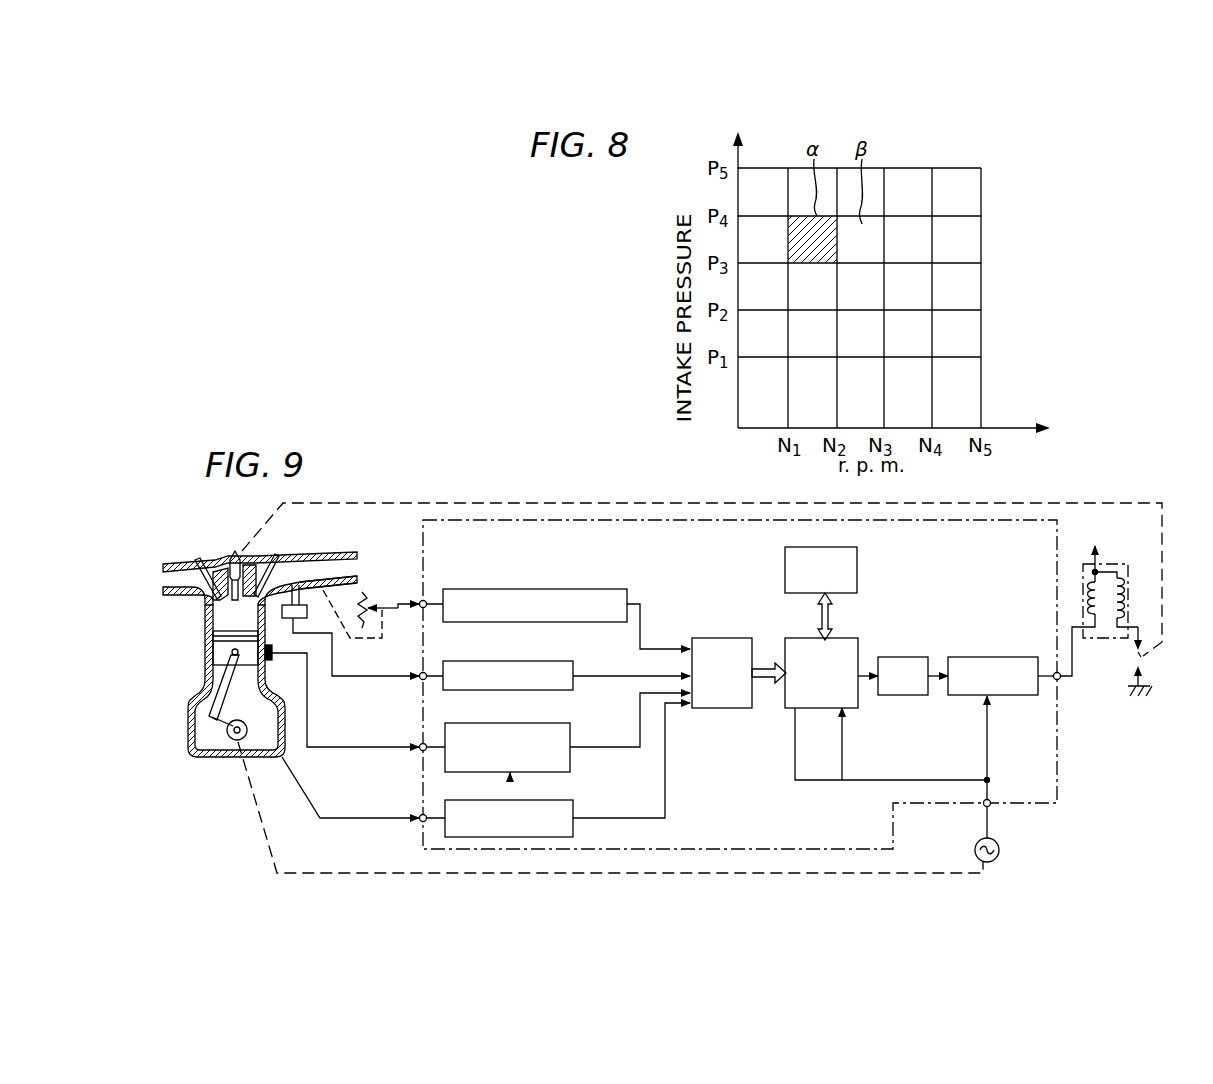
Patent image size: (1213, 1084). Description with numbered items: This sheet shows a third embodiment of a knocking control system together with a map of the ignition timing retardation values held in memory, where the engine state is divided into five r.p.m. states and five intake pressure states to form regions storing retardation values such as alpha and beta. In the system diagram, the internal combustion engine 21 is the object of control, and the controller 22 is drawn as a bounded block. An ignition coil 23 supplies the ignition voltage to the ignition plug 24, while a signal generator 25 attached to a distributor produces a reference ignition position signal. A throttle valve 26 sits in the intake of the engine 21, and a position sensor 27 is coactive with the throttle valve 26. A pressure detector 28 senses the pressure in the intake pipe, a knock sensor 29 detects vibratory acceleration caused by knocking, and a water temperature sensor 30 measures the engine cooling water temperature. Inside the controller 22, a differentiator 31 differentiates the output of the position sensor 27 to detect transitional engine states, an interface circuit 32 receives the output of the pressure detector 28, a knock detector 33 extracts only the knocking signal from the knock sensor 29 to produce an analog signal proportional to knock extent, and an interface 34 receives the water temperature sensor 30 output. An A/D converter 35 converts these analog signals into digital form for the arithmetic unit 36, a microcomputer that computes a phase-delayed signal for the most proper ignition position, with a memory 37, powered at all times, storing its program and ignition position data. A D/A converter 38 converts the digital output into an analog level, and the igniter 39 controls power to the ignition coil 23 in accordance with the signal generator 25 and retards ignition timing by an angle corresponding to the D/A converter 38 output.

The internal combustion engine 21 is at (192, 692).
The controller 22 is at (421, 576).
The ignition coil 23 is at (1105, 560).
The ignition plug 24 is at (232, 558).
The signal generator 25 is at (996, 841).
The throttle valve 26 is at (320, 574).
The position sensor 27 is at (365, 600).
The pressure detector 28 is at (307, 612).
The knock sensor 29 is at (273, 655).
The water temperature sensor 30 is at (285, 757).
The differentiator 31 is at (518, 588).
The interface circuit 32 is at (490, 660).
The knock detector 33 is at (483, 722).
The interface 34 is at (502, 799).
The A/D converter 35 is at (713, 637).
The arithmetic unit 36 is at (840, 637).
The memory 37 is at (858, 566).
The D/A converter 38 is at (893, 656).
The igniter 39 is at (975, 656).